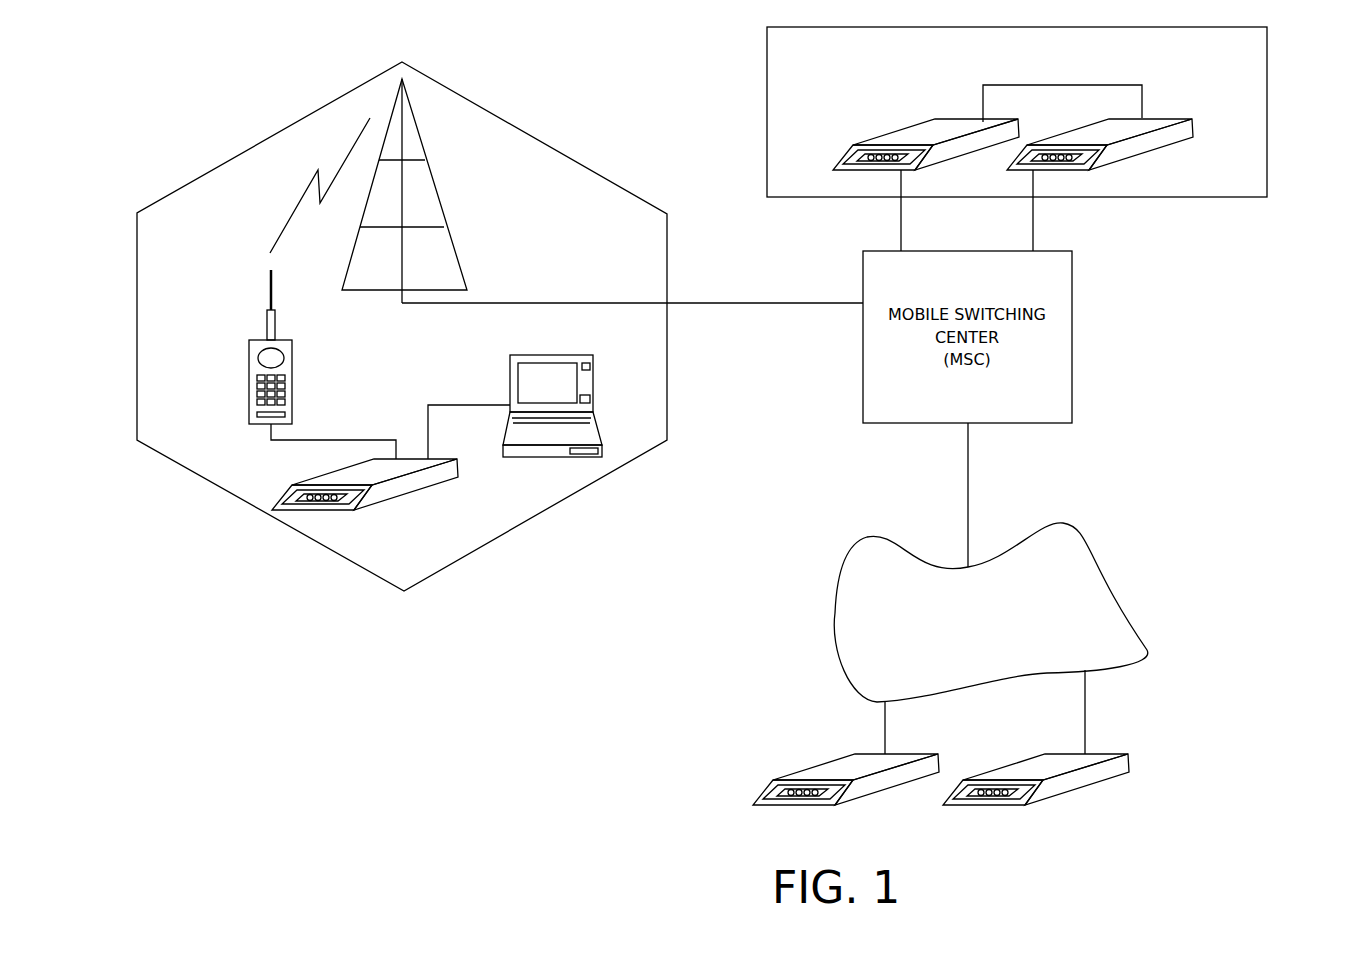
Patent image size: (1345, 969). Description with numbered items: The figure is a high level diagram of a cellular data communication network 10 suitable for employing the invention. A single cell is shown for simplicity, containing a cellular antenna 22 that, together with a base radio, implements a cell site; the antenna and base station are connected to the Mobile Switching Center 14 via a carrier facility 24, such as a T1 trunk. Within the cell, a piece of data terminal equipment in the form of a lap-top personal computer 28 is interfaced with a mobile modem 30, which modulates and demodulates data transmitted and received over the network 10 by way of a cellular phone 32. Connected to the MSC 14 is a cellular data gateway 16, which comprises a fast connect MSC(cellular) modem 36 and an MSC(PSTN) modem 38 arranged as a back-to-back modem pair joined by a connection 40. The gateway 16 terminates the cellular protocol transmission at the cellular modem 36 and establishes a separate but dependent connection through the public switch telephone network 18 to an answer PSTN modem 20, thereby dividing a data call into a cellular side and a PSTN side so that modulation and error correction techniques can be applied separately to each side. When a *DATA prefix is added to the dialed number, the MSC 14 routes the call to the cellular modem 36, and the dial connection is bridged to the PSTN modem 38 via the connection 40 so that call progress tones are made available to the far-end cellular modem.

The cellular data communication network 10 is at (472, 735).
The Mobile Switching Center 14 is at (255, 510).
The cellular data gateway 16 is at (1268, 135).
The public switch telephone network 18 is at (835, 640).
The PSTN modem 20 is at (818, 806).
The cellular antenna 22 is at (450, 236).
The carrier facility 24 is at (800, 304).
The lap-top personal computer 28 is at (555, 458).
The mobile modem 30 is at (405, 495).
The cellular phone 32 is at (293, 350).
The fast connect MSC(cellular) modem 36 is at (960, 119).
The MSC(PSTN) modem 38 is at (1168, 119).
The connection 40 is at (1058, 85).